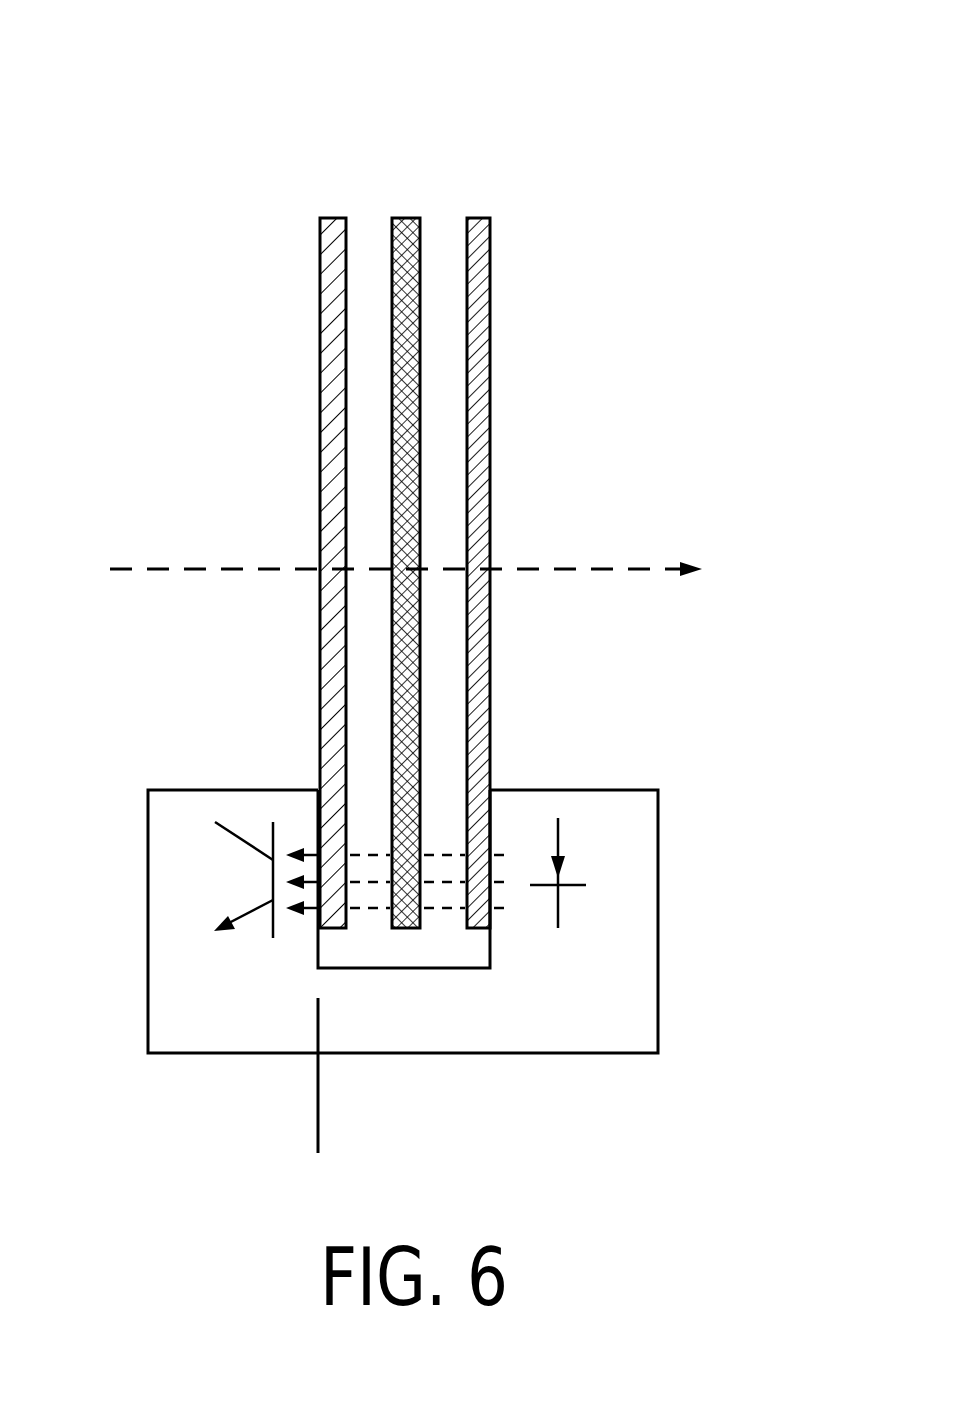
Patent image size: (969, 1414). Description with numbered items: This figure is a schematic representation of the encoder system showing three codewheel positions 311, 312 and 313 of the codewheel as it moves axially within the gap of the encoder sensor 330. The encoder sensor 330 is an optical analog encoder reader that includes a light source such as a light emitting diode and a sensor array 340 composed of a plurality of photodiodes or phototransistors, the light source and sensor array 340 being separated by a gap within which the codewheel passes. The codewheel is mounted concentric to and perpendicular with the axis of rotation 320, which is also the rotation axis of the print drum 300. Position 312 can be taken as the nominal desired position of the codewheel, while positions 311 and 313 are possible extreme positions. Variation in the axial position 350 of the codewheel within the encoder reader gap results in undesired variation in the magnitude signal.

The print drum 300 is at (656, 101).
The codewheel position 311 is at (336, 218).
The codewheel position 312 is at (408, 218).
The codewheel position 313 is at (481, 218).
The axis of rotation 320 is at (703, 563).
The encoder sensor 330 is at (658, 912).
The sensor array 340 is at (273, 868).
The axial position 350 is at (316, 1093).